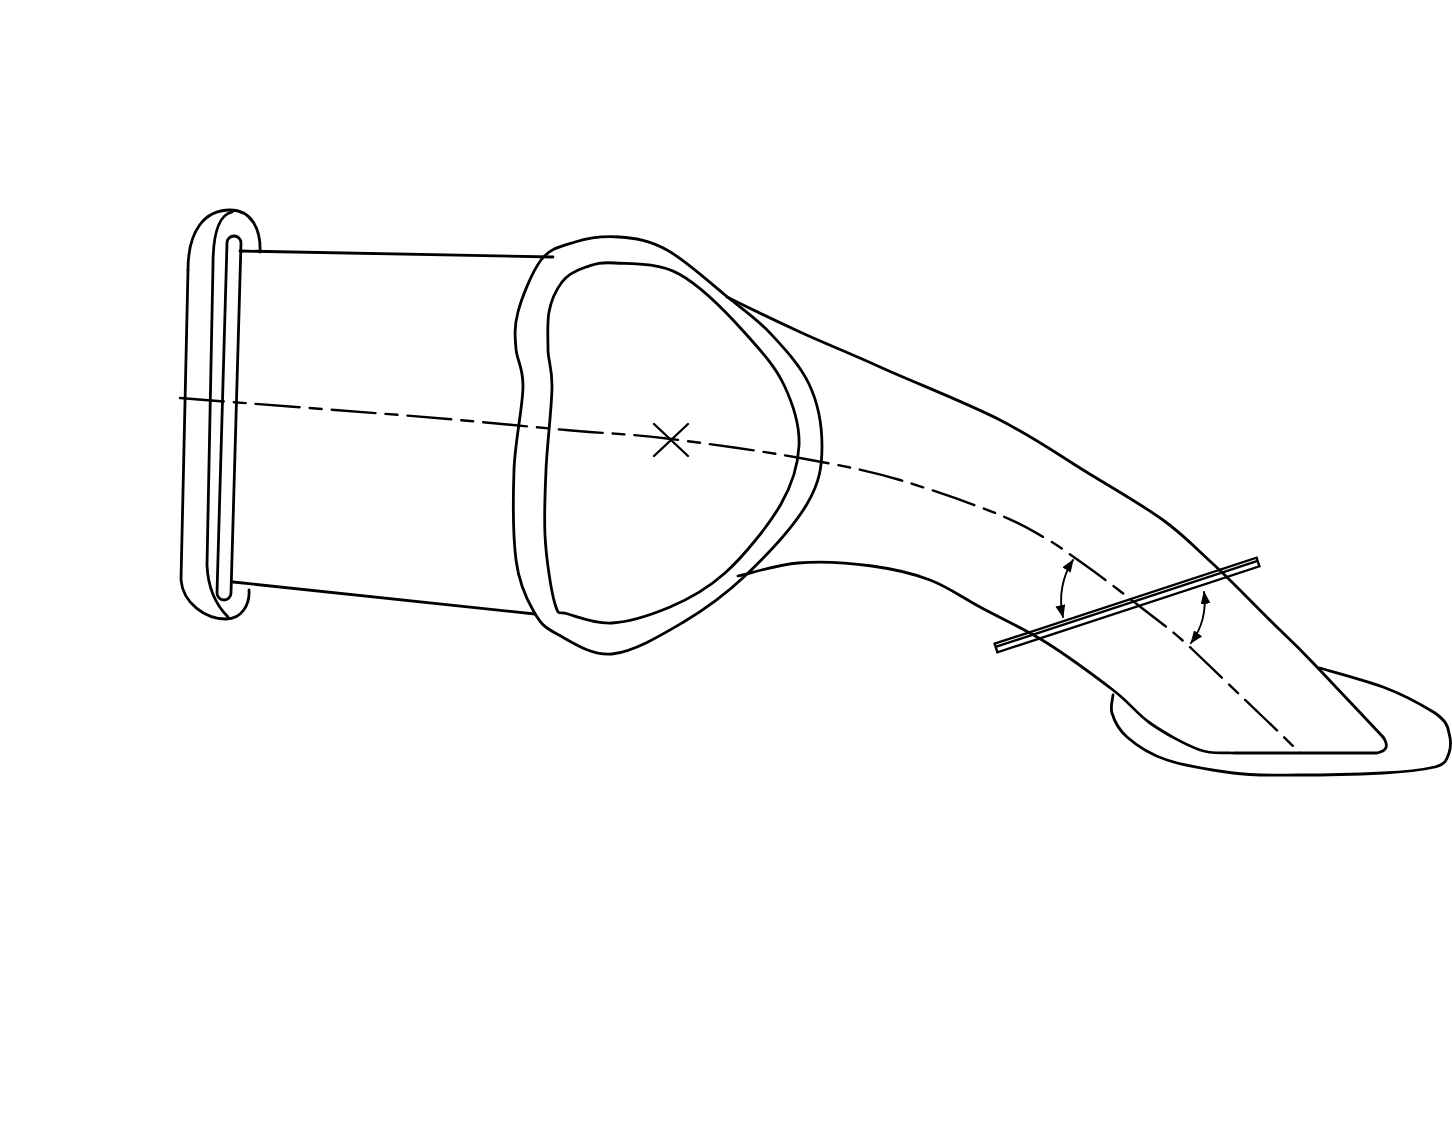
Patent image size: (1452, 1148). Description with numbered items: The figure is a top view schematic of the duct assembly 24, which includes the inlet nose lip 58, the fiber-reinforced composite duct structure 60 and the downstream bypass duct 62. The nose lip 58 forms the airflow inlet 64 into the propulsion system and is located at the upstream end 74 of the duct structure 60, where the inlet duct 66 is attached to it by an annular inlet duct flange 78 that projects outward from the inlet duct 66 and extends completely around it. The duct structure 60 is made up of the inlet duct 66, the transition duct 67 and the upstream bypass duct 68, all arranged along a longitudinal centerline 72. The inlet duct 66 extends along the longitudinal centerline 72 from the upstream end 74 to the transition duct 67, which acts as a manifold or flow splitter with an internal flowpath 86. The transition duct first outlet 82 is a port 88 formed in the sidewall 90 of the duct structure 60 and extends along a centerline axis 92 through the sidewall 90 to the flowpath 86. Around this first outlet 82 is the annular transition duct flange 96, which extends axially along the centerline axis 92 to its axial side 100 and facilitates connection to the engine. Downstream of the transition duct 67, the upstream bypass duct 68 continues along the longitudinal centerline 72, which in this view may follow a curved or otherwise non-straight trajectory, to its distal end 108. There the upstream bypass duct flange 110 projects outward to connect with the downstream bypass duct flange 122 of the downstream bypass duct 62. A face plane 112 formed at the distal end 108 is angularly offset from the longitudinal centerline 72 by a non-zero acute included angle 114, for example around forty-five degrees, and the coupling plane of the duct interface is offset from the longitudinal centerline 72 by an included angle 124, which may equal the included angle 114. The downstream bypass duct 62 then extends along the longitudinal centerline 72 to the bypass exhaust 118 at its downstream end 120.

The duct assembly 24 is at (1116, 291).
The inlet nose lip 58 is at (251, 193).
The fiber-reinforced composite duct structure 60 is at (464, 203).
The downstream bypass duct 62 is at (1303, 573).
The airflow inlet 64 is at (186, 345).
The inlet duct 66 is at (386, 604).
The transition duct 67 is at (597, 661).
The upstream bypass duct 68 is at (843, 574).
The longitudinal centerline 72 is at (322, 418).
The upstream end 74 is at (210, 563).
The inlet duct flange 78 is at (247, 295).
The first outlet 82 is at (663, 295).
The internal flowpath 86 is at (657, 368).
The port 88 is at (672, 443).
The sidewall 90 is at (528, 253).
The centerline axis 92 is at (670, 452).
The transition duct flange 96 is at (796, 351).
The axial side 100 is at (802, 418).
The distal end 108 is at (1242, 580).
The upstream bypass duct flange 110 is at (1225, 567).
The face plane 112 is at (1100, 625).
The included angle 114 is at (1058, 585).
The bypass exhaust 118 is at (1263, 777).
The downstream end 120 is at (1350, 777).
The downstream bypass duct flange 122 is at (1252, 572).
The included angle 124 is at (1207, 620).